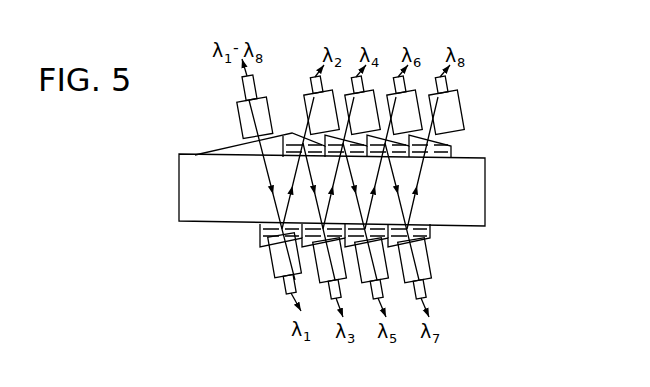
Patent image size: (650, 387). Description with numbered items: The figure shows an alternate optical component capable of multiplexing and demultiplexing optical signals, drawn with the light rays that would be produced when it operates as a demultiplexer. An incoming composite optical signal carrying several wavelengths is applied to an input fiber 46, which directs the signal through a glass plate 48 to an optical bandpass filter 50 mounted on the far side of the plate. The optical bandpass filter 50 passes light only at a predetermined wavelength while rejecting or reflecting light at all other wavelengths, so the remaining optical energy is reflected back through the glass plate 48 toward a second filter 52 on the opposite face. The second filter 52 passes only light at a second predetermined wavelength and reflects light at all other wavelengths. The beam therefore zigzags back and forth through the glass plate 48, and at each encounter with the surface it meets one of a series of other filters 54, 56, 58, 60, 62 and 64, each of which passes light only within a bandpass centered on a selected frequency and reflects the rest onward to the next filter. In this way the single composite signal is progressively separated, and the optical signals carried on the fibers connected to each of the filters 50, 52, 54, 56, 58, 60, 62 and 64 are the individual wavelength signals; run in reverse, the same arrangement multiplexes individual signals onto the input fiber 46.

The input fiber 46 is at (244, 124).
The glass plate 48 is at (212, 209).
The optical bandpass filter 50 is at (264, 228).
The second filter 52 is at (289, 140).
The filter 54 is at (312, 243).
The filter 56 is at (374, 130).
The filter 58 is at (368, 275).
The filter 60 is at (410, 108).
The filter 62 is at (425, 277).
The filter 64 is at (452, 113).